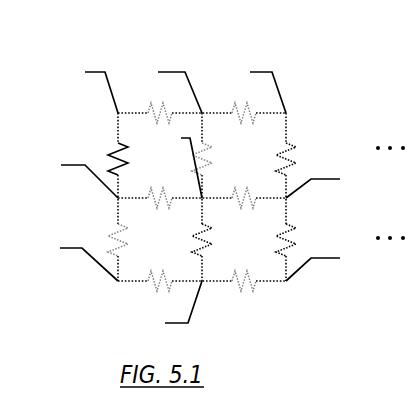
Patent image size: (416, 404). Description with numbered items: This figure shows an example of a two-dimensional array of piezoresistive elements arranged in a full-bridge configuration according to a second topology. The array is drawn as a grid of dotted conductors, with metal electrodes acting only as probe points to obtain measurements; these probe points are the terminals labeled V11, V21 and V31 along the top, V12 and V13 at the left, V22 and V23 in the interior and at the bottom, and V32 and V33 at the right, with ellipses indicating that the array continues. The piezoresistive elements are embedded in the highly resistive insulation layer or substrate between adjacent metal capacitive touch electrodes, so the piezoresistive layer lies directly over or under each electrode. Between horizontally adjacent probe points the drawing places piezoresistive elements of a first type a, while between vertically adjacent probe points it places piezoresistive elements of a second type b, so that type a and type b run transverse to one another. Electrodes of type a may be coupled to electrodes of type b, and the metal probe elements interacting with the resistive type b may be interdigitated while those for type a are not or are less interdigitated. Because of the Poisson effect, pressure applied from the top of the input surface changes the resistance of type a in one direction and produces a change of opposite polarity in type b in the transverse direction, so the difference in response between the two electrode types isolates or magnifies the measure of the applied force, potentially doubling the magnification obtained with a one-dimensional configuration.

The voltage input terminal V11 is at (84, 85).
The voltage input terminal V12 is at (72, 174).
The voltage input terminal V13 is at (72, 258).
The voltage input terminal V21 is at (167, 85).
The voltage input terminal V22 is at (174, 162).
The voltage input terminal V23 is at (167, 309).
The voltage input terminal V31 is at (252, 85).
The voltage output terminal V32 is at (335, 182).
The voltage output terminal V33 is at (335, 264).
The piezoresistive element of the first type a is at (202, 190).
The piezoresistive element of the second type b is at (208, 199).